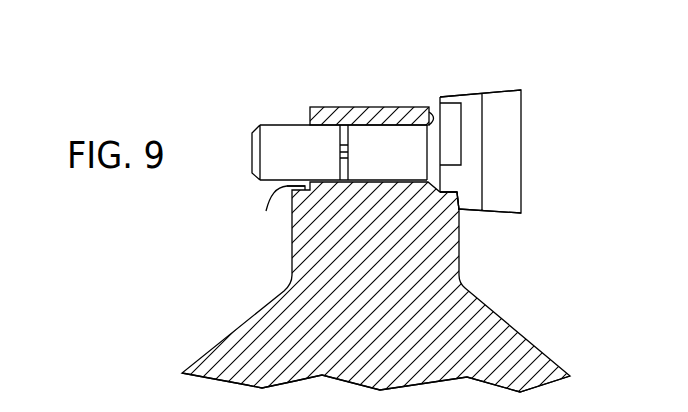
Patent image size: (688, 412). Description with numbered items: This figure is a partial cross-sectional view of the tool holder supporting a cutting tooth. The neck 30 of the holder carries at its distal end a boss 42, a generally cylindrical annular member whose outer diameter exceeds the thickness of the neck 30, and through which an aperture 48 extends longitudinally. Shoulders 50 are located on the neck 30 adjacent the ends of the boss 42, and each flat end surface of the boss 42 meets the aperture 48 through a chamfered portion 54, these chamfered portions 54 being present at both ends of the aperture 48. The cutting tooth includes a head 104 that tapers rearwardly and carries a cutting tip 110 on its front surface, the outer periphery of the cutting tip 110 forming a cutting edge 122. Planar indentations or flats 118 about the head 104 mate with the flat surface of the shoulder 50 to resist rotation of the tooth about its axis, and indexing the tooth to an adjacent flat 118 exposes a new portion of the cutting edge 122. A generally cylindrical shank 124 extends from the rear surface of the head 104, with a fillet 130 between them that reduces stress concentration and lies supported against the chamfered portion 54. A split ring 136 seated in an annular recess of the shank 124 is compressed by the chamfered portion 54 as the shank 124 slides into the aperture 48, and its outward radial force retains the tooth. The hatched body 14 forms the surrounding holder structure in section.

The body 14 is at (566, 372).
The neck 30 is at (460, 258).
The boss 42 is at (387, 107).
The aperture 48 is at (362, 133).
The shoulder 50 is at (288, 187).
The chamfered portion 54 is at (312, 124).
The head 104 is at (458, 208).
The cutting tip 110 is at (513, 161).
The planar indentation 118 is at (452, 115).
The cutting edge 122 is at (520, 90).
The shank 124 is at (265, 210).
The fillet 130 is at (435, 120).
The split ring 136 is at (343, 140).